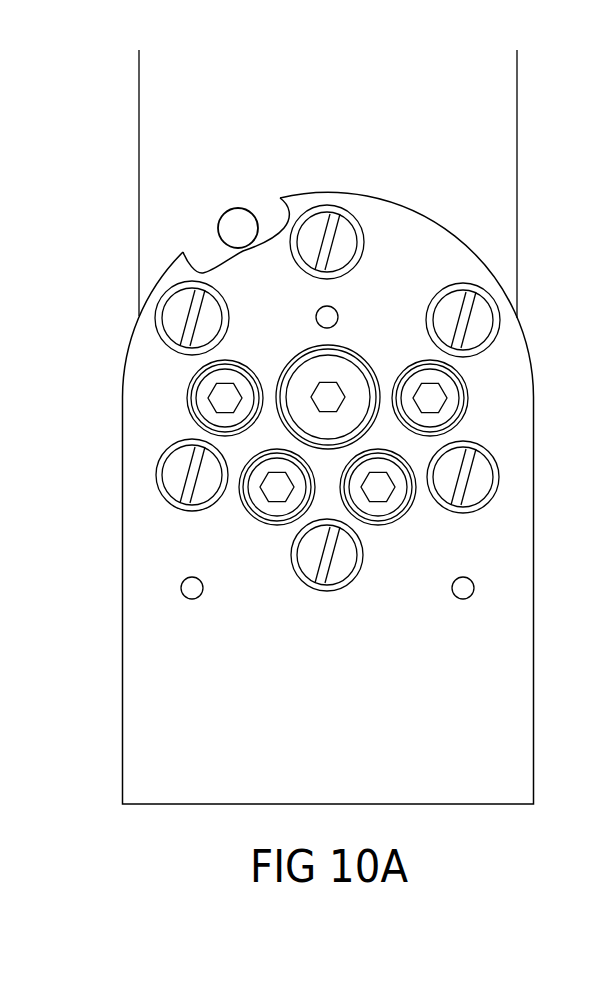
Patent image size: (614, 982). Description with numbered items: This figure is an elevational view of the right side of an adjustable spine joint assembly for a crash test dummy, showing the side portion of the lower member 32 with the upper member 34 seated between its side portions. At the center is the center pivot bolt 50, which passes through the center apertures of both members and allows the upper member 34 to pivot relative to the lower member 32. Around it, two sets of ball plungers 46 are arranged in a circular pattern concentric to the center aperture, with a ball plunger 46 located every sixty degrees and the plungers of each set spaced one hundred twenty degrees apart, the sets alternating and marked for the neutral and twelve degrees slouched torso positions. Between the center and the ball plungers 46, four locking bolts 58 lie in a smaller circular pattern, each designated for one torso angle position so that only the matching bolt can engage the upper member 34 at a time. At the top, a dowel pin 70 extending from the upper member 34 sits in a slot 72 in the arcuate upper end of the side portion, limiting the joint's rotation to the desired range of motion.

The lower member 32 is at (533, 648).
The upper member 34 is at (517, 165).
The ball plungers 46 is at (322, 217).
The center pivot bolt 50 is at (330, 392).
The locking bolts 58 is at (200, 410).
The dowel pin 70 is at (237, 229).
The slot 72 is at (202, 270).